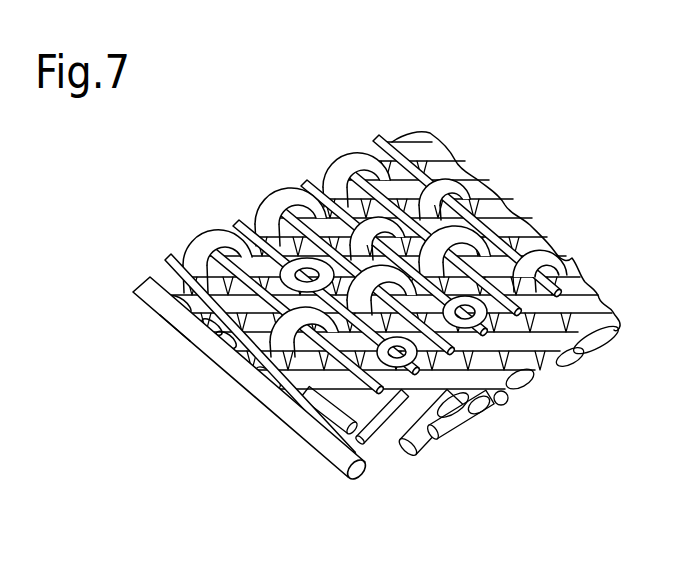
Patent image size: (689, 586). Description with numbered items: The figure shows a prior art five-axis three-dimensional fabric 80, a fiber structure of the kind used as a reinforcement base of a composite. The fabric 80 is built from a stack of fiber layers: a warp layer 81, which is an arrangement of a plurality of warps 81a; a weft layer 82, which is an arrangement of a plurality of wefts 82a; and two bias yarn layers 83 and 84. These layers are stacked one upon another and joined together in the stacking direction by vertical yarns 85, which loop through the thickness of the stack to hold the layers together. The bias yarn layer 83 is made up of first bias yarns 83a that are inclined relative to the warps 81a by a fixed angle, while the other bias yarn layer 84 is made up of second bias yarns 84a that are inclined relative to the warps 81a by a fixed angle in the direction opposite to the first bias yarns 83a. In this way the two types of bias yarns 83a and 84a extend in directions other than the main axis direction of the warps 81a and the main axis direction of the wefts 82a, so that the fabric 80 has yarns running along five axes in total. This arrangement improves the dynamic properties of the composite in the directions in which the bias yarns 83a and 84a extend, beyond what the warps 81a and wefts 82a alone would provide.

The five-axis three-dimensional fabric 80 is at (596, 231).
The warp layer 81 is at (346, 457).
The warps 81a is at (373, 445).
The weft layer 82 is at (146, 318).
The wefts 82a is at (178, 320).
The bias yarn layer 83 is at (549, 385).
The first bias yarns 83a is at (528, 387).
The bias yarn layer 84 is at (466, 420).
The second bias yarns 84a is at (489, 415).
The vertical yarns 85 is at (256, 362).